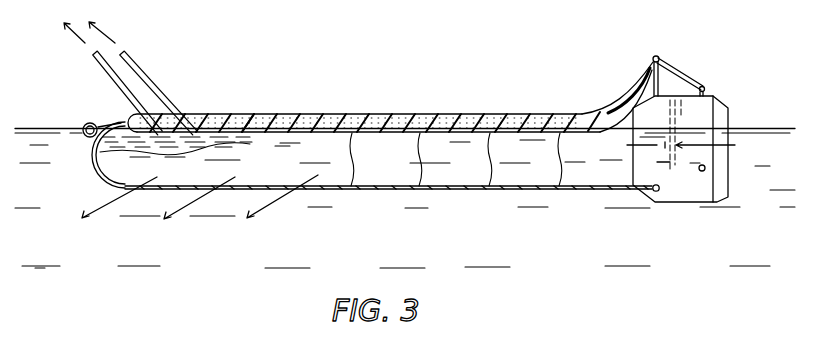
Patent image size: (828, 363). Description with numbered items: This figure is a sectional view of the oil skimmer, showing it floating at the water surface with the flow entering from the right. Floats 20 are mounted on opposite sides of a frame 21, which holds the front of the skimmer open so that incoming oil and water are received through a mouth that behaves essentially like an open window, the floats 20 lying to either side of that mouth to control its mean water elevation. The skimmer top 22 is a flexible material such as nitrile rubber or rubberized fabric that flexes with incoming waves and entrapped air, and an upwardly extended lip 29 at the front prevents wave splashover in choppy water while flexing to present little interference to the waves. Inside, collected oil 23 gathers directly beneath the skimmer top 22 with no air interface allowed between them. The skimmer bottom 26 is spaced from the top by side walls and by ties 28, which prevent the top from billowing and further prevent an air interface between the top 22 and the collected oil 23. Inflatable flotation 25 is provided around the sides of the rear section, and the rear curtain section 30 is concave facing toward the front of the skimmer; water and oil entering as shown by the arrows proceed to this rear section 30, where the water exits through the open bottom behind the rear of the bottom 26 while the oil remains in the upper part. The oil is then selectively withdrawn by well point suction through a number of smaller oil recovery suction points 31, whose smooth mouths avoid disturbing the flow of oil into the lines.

The floats 20 is at (729, 107).
The frame 21 is at (676, 66).
The skimmer top 22 is at (330, 113).
The collected oil 23 is at (247, 113).
The inflatable flotation 25 is at (87, 124).
The skimmer bottom 26 is at (492, 191).
The ties 28 is at (436, 128).
The upwardly extended lip 29 is at (620, 104).
The rear curtain section 30 is at (93, 171).
The oil recovery suction points 31 is at (182, 110).